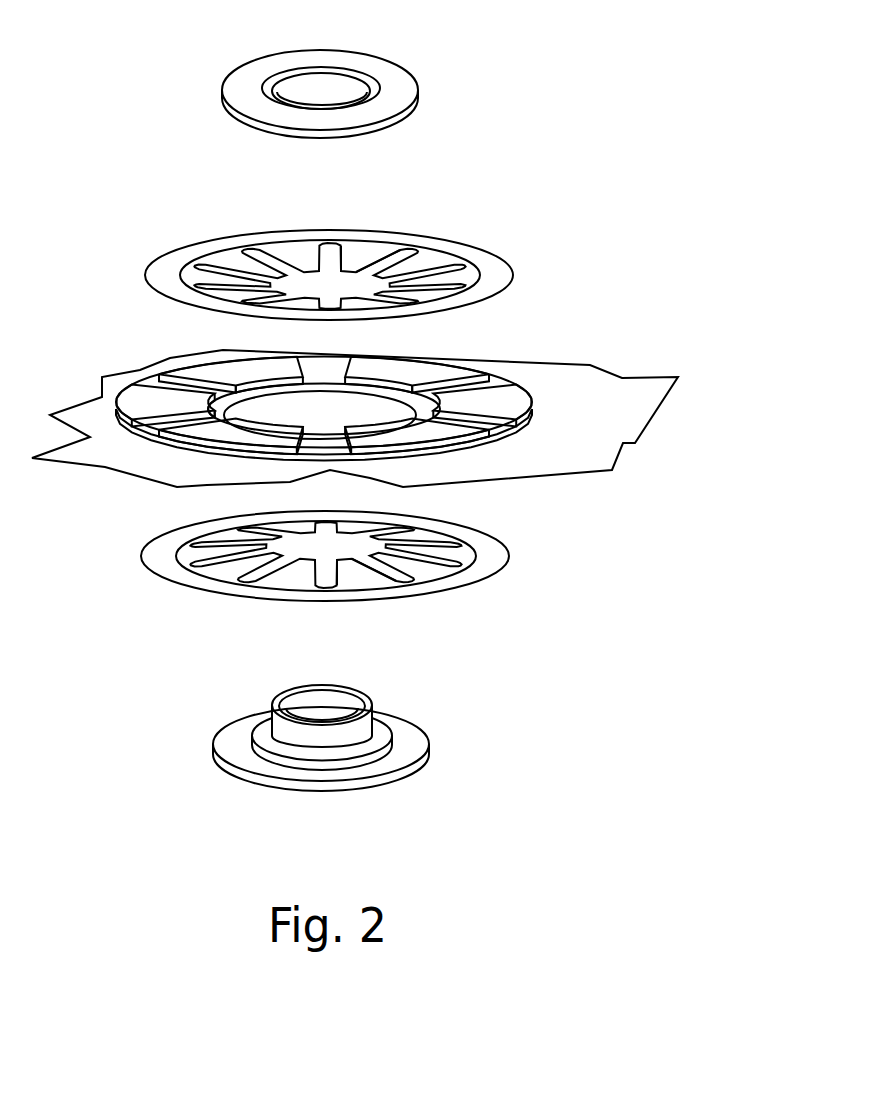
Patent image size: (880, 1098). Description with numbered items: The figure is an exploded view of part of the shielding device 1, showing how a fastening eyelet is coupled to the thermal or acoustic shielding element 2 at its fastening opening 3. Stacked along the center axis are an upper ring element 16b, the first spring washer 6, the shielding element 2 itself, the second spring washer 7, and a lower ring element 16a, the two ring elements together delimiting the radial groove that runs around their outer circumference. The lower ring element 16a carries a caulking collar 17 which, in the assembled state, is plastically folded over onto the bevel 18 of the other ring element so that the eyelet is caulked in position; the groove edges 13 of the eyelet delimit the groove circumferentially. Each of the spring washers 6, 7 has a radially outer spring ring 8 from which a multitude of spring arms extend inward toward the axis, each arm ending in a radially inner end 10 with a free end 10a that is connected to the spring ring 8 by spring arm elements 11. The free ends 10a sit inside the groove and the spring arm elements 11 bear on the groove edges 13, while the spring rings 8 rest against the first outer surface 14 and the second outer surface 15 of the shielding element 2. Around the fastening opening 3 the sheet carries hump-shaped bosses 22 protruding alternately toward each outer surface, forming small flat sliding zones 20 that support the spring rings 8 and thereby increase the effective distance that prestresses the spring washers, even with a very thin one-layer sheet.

The shielding device 1 is at (560, 127).
The shielding element 2 is at (643, 398).
The fastening opening 3 is at (390, 418).
The first spring washer 6 is at (443, 242).
The second spring washer 7 is at (363, 577).
The spring ring 8 is at (500, 270).
The radially inner ends 10 is at (303, 273).
The free ends 10a is at (327, 415).
The spring arm elements 11 is at (377, 255).
The groove edges 13 is at (407, 765).
The first outer surface 14 is at (637, 423).
The second outer surface 15 is at (593, 480).
The ring element 16a is at (407, 748).
The ring element 16b is at (403, 92).
The caulking collar 17 is at (372, 702).
The bevel 18 is at (343, 73).
The sliding zones 20 is at (493, 392).
The bosses 22 is at (487, 445).